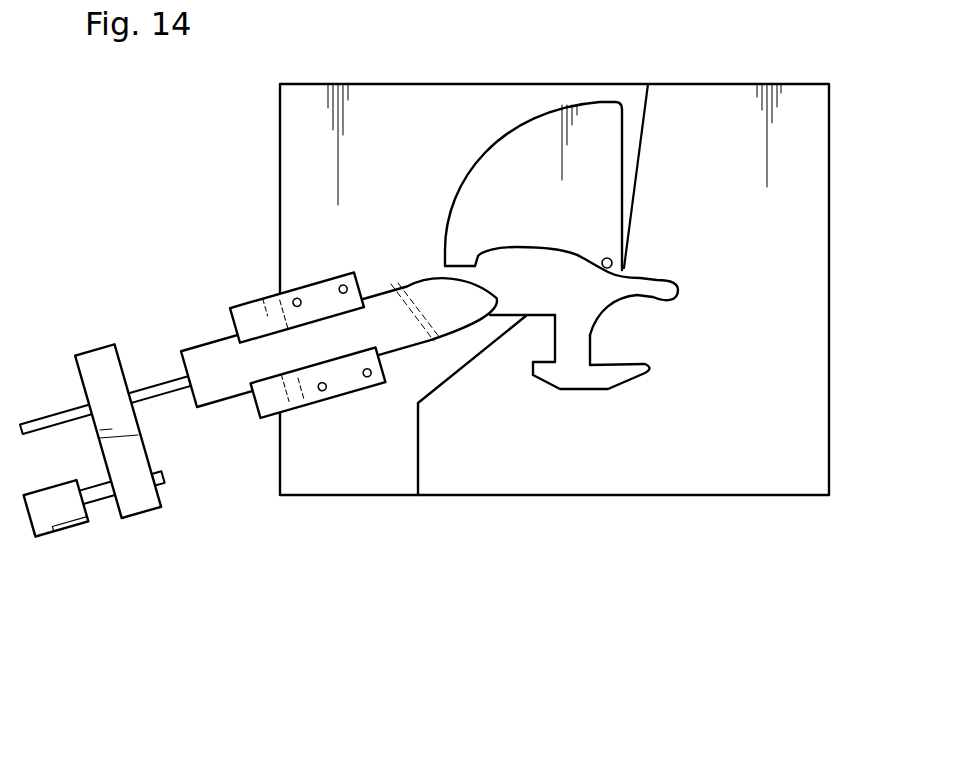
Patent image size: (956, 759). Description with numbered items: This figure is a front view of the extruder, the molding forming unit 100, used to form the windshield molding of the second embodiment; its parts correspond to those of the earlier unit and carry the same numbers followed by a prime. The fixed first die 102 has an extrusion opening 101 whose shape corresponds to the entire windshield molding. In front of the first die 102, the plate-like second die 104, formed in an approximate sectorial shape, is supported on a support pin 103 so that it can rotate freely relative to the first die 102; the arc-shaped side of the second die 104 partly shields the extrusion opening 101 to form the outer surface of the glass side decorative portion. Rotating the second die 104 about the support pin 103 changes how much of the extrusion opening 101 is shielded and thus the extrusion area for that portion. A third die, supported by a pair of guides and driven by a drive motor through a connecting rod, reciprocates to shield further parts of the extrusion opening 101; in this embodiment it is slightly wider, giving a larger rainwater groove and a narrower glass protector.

The molding forming unit 100 is at (848, 34).
The extrusion opening 101 is at (580, 375).
The first die 102 is at (735, 480).
The support pin 103 is at (722, 244).
The second die 104 is at (492, 168).